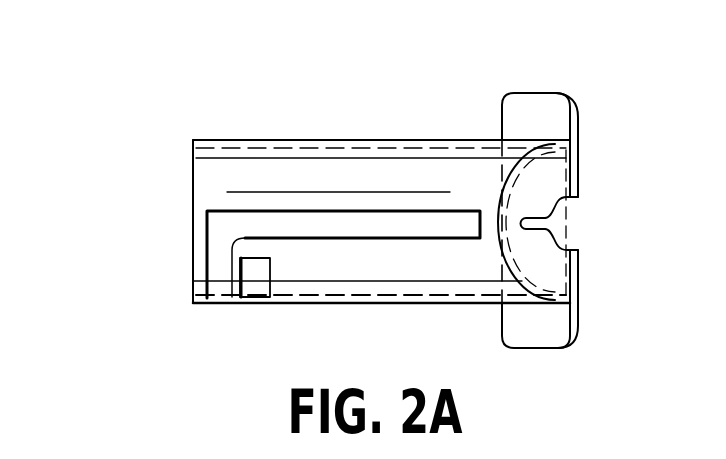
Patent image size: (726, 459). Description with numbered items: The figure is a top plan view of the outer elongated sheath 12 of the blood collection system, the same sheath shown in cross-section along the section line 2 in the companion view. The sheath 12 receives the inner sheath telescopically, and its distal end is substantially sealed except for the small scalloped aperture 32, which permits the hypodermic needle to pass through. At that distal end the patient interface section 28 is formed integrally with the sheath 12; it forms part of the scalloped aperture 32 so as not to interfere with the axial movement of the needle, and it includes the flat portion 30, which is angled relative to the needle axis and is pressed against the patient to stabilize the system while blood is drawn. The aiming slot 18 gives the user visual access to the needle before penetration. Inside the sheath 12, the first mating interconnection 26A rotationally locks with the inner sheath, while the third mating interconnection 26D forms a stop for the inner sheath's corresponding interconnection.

The section line 2 is at (178, 225).
The outer elongated sheath 12 is at (609, 81).
The aiming slot 18 is at (518, 218).
The first mating interconnection 26A is at (286, 270).
The third mating interconnection 26D is at (192, 289).
The patient interface section 28 is at (578, 333).
The flat portion 30 is at (528, 332).
The scalloped aperture 32 is at (568, 210).